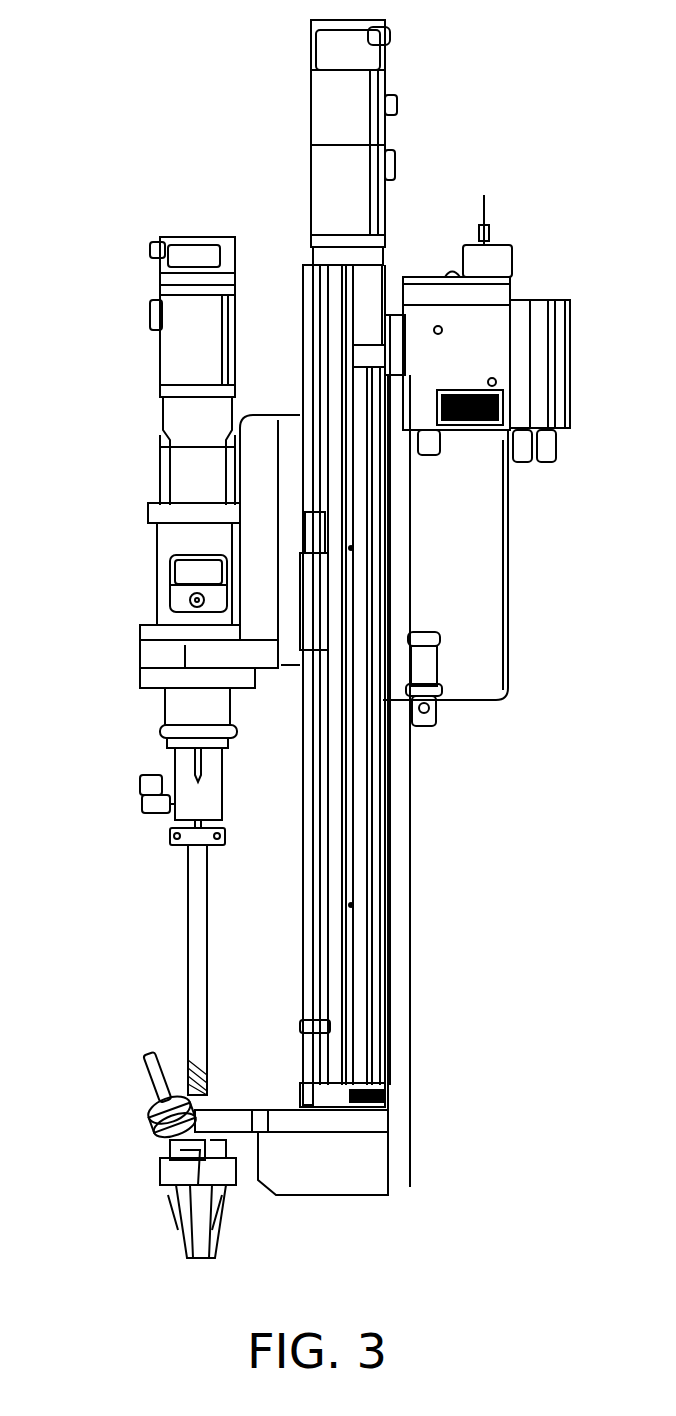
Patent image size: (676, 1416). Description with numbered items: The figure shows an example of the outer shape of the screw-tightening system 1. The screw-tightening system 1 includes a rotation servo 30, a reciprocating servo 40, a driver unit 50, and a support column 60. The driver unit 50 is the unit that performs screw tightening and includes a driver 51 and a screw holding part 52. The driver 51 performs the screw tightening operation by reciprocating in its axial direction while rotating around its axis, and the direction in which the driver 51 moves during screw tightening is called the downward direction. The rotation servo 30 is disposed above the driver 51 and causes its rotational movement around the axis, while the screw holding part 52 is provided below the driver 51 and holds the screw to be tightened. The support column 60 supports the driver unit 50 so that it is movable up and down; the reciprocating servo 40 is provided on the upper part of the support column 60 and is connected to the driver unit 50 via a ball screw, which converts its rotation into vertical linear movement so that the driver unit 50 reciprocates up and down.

The screw-tightening system 1 is at (503, 37).
The rotation servo 30 is at (152, 315).
The reciprocating servo 40 is at (311, 172).
The driver unit 50 is at (90, 922).
The driver 51 is at (188, 965).
The screw holding part 52 is at (170, 1205).
The support column 60 is at (370, 923).